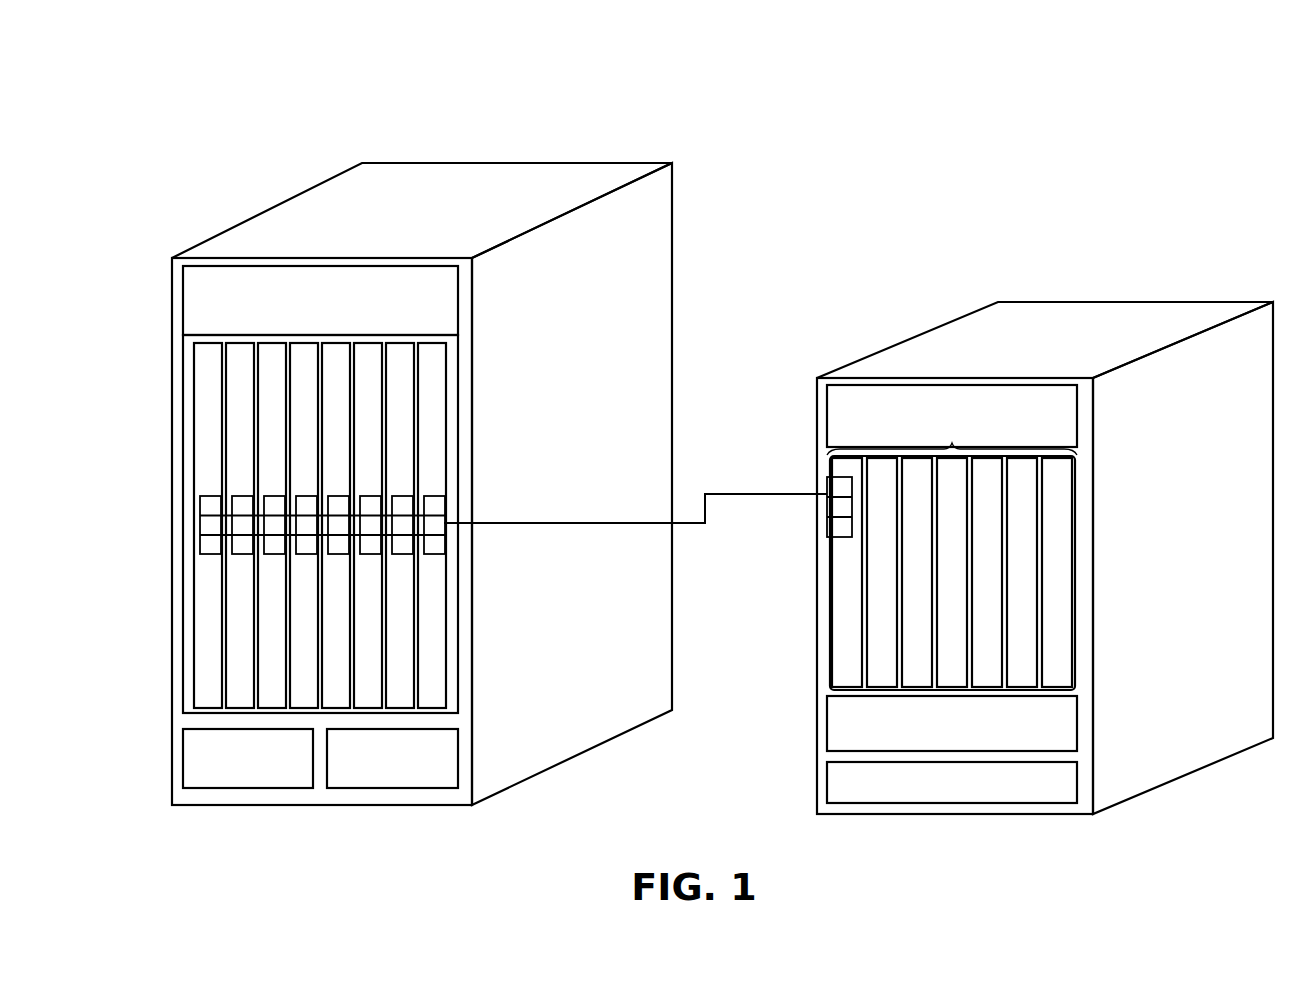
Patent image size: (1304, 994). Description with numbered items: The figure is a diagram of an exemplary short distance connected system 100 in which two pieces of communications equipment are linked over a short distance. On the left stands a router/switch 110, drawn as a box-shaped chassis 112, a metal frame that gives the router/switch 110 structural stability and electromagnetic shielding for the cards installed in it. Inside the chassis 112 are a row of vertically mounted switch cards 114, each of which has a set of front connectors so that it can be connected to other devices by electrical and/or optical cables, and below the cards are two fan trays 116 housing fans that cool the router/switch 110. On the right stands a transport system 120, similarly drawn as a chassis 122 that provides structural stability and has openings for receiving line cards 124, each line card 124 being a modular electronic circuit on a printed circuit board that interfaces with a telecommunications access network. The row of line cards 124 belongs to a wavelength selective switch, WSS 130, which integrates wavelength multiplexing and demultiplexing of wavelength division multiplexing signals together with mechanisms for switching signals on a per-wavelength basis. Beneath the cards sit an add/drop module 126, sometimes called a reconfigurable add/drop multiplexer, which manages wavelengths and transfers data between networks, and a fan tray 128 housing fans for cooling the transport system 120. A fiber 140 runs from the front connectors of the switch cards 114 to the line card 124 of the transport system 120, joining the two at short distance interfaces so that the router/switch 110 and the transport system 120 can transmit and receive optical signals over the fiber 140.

The short distance connected system 100 is at (266, 86).
The router/switch 110 is at (416, 229).
The chassis 112 is at (512, 163).
The switch card 114 is at (446, 367).
The fan trays 116 is at (320, 758).
The transport system 120 is at (1059, 362).
The chassis 122 is at (941, 328).
The line card 124 is at (852, 650).
The add/drop module 126 is at (1042, 752).
The fan tray 128 is at (952, 782).
The wavelength selective switch (WSS) 130 is at (1073, 540).
The fiber 140 is at (734, 493).